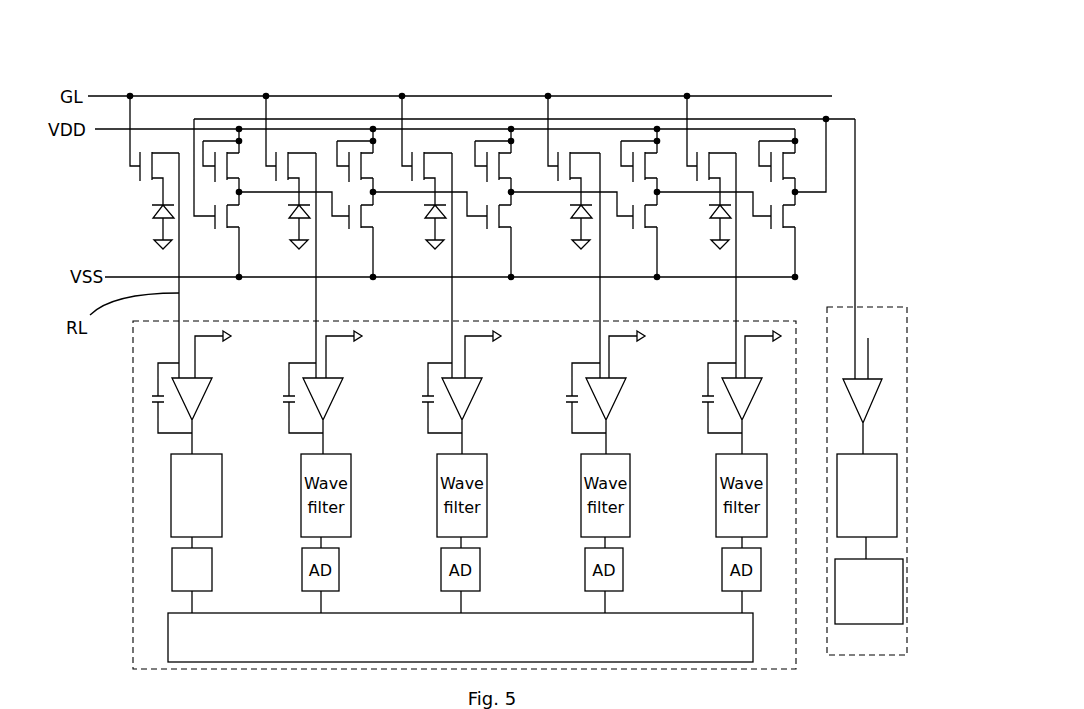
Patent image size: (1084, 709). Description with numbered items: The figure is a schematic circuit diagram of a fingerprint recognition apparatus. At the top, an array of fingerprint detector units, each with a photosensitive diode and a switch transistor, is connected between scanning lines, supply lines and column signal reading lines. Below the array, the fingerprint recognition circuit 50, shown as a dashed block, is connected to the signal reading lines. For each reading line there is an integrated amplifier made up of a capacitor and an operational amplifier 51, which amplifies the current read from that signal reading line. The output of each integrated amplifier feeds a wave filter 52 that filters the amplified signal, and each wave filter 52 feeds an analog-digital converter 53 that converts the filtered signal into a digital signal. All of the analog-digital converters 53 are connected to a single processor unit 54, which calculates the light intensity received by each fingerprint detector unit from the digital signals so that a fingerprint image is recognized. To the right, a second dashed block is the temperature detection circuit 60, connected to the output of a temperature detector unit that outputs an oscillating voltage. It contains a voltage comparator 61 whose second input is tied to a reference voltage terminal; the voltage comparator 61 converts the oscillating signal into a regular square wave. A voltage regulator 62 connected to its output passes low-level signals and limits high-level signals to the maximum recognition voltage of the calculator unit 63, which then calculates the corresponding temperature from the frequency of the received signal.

The fingerprint recognition circuit 50 is at (133, 454).
The operational amplifier 51 is at (201, 395).
The wave filter 52 is at (171, 502).
The analog-digital converter 53 is at (172, 572).
The processor unit 54 is at (168, 633).
The temperature detection circuit 60 is at (907, 360).
The voltage comparator 61 is at (877, 396).
The voltage regulator 62 is at (897, 468).
The calculator unit 63 is at (903, 571).